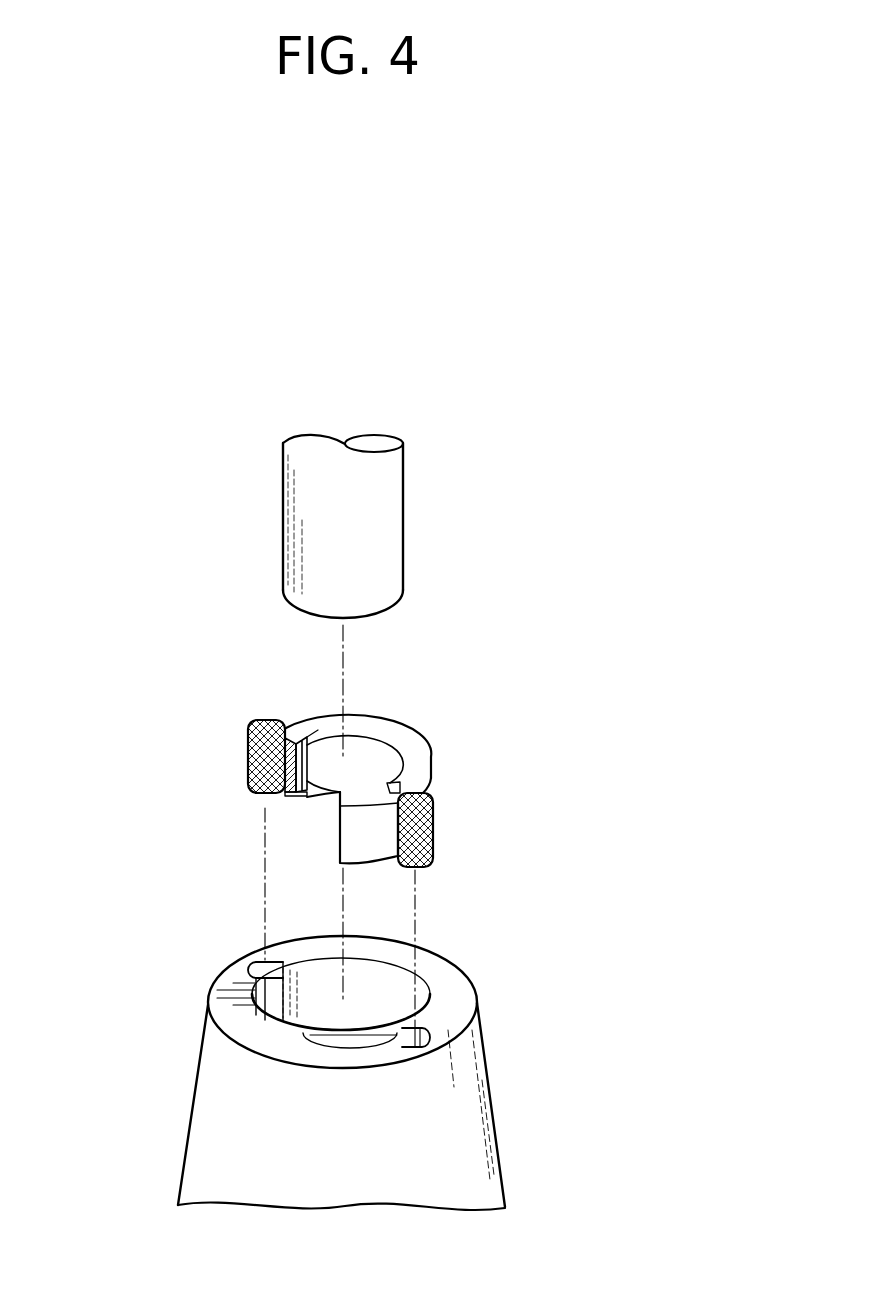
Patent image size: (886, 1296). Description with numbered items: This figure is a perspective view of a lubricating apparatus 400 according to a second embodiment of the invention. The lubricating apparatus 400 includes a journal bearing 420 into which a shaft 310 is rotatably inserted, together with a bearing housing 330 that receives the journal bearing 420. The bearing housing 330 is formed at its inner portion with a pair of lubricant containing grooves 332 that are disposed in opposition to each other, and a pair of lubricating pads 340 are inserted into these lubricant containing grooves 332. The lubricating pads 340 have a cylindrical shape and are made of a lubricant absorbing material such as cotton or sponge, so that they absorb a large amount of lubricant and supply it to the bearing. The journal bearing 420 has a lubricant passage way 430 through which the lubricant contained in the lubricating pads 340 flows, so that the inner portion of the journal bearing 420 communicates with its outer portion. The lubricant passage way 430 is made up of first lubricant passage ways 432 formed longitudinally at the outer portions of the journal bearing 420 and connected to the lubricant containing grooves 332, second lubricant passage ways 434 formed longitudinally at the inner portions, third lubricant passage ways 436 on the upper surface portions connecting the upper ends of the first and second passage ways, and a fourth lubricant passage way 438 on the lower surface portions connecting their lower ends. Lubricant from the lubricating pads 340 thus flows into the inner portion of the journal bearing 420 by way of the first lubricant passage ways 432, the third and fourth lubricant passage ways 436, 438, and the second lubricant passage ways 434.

The lubricating apparatus 400 is at (370, 357).
The shaft 310 is at (403, 530).
The journal bearing 420 is at (431, 745).
The lubricant passage way 430 is at (89, 678).
The first lubricant passage ways 432 is at (248, 765).
The second lubricant passage ways 434 is at (316, 765).
The third lubricant passage ways 436 is at (303, 737).
The fourth lubricant passage way 438 is at (288, 793).
The lubricating pads 340 is at (433, 836).
The bearing housing 330 is at (344, 1042).
The lubricant containing grooves 332 is at (262, 967).